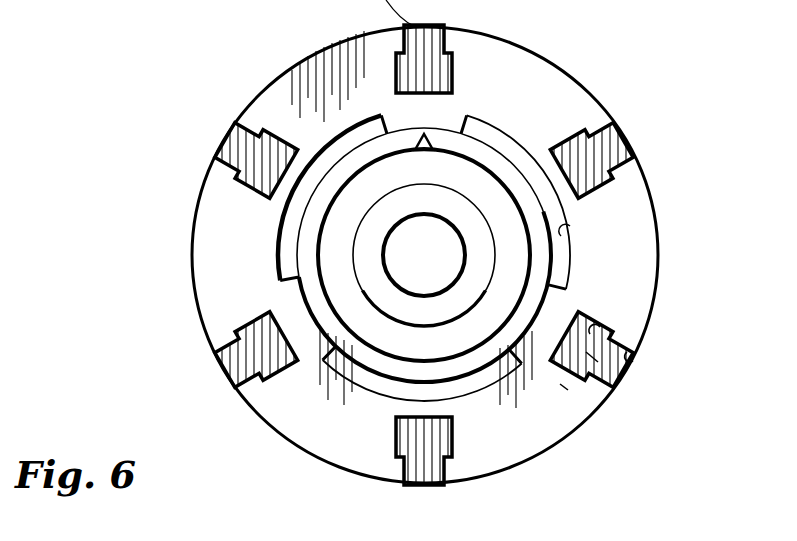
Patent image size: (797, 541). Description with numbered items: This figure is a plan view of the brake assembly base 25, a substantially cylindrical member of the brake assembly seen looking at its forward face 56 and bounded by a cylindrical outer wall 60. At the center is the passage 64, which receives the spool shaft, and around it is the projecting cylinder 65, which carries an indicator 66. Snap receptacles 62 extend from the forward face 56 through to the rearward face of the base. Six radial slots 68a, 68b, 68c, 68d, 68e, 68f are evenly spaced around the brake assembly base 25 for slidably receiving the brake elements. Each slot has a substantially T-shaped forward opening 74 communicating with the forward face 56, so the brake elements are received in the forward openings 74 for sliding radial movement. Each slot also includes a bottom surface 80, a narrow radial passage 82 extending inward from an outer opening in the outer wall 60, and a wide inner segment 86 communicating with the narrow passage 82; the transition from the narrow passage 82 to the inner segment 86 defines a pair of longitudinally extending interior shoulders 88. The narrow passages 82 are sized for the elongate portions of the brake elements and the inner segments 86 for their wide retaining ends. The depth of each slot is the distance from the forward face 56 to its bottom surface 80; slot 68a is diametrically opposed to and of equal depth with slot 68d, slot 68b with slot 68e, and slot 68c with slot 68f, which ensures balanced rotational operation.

The brake assembly base 25 is at (600, 84).
The forward face 56 is at (622, 257).
The cylindrical outer wall 60 is at (269, 80).
The snap receptacles 62 is at (565, 230).
The passage 64 is at (439, 277).
The projecting cylinder 65 is at (378, 356).
The indicator 66 is at (426, 134).
The radial slot 68a is at (426, 54).
The radial slot 68b is at (636, 148).
The radial slot 68c is at (641, 378).
The radial slot 68d is at (420, 488).
The radial slot 68e is at (218, 367).
The radial slot 68f is at (230, 130).
The forward opening 74 is at (397, 63).
The bottom surface 80 is at (593, 357).
The narrow radial passage 82 is at (633, 357).
The wide inner segment 86 is at (598, 330).
The interior shoulders 88 is at (564, 388).